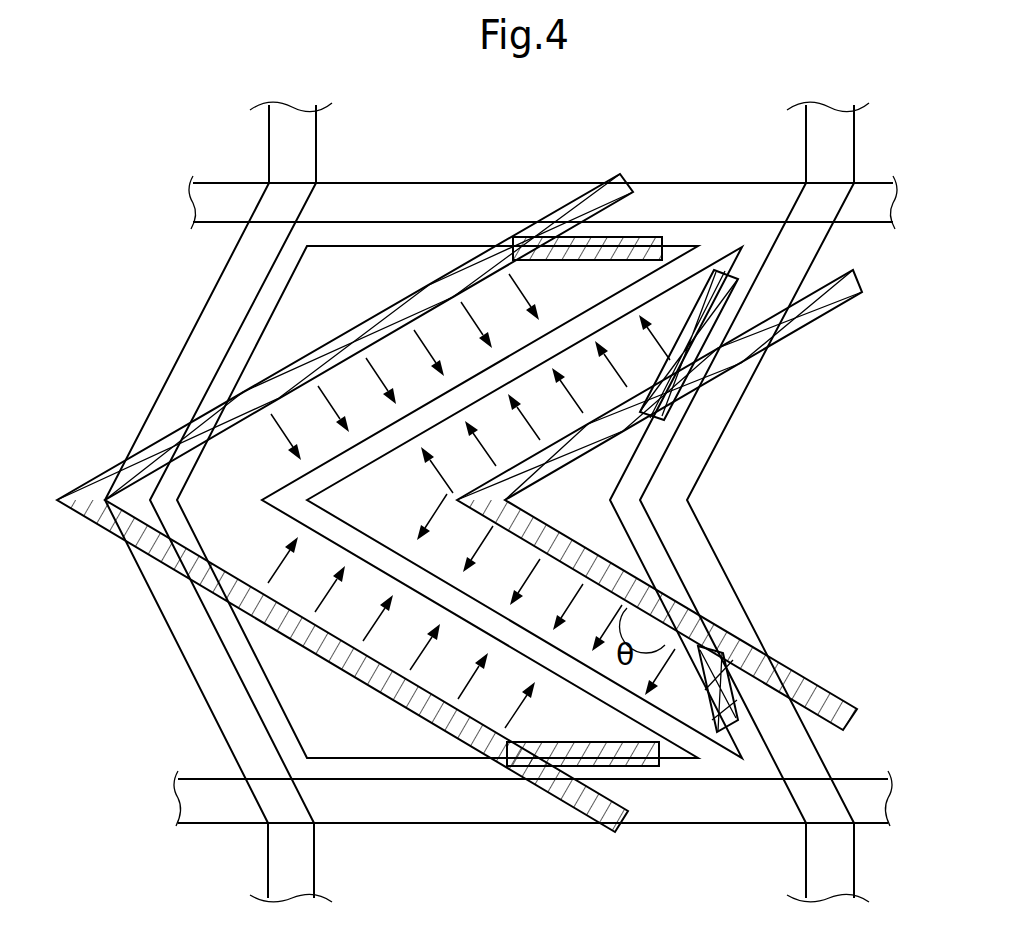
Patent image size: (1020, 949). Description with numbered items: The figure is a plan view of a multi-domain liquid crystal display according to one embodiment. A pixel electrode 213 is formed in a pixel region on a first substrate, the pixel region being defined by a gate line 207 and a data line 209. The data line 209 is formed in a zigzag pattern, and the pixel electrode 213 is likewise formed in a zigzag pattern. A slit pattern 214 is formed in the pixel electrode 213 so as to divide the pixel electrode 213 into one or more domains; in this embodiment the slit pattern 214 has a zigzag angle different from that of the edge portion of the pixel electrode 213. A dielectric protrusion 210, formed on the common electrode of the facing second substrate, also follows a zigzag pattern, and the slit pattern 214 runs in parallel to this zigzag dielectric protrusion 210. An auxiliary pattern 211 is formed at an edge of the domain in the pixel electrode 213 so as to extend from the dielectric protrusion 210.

The gate line 207 is at (418, 805).
The data line 209 is at (710, 422).
The dielectric protrusion 210 is at (327, 353).
The auxiliary pattern 211 is at (720, 695).
The pixel electrode 213 is at (372, 735).
The slit pattern 214 is at (583, 325).